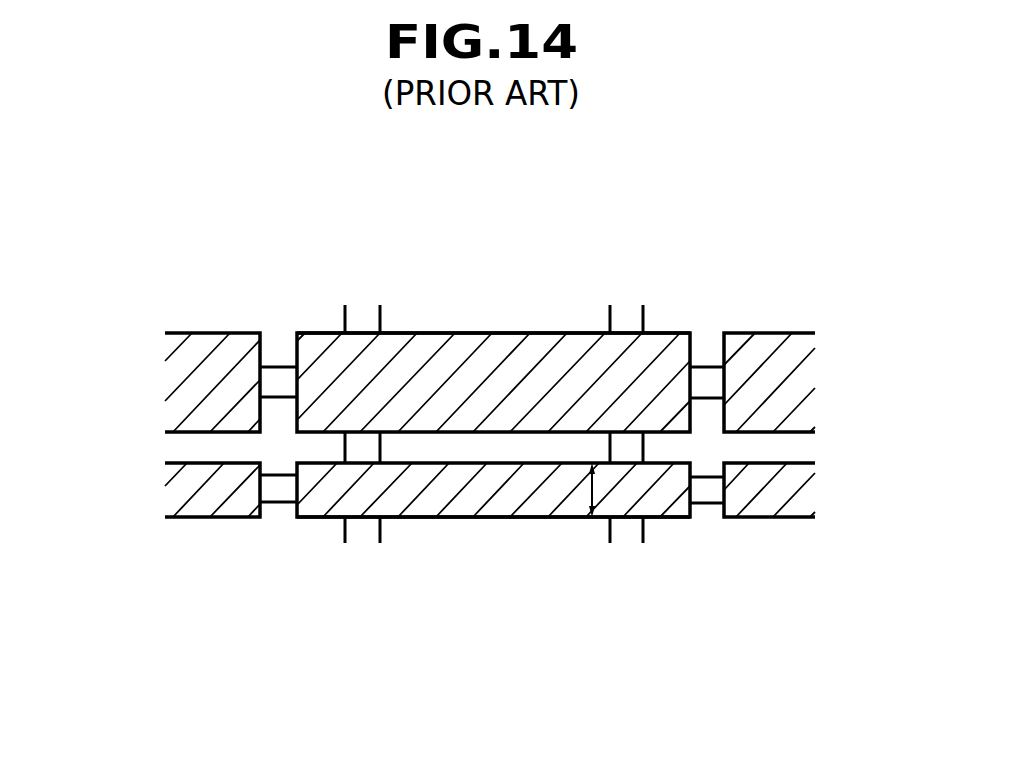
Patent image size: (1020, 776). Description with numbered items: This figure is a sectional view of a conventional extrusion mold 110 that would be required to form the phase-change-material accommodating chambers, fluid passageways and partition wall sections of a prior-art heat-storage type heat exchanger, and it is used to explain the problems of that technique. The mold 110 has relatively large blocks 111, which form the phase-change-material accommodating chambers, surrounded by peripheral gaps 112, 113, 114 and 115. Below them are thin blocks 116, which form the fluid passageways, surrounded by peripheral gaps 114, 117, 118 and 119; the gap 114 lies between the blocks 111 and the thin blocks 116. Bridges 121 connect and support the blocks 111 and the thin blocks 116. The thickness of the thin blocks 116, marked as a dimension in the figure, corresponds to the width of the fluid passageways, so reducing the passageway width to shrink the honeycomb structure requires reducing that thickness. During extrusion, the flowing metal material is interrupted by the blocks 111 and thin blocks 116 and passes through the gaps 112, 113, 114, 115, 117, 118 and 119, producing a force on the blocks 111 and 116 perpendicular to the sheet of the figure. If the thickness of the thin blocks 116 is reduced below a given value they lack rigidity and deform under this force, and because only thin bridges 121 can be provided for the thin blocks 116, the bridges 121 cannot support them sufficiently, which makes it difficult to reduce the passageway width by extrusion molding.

The mold 110 is at (304, 568).
The blocks 111 is at (183, 357).
The peripheral gap 112 is at (456, 312).
The peripheral gap 113 is at (707, 347).
The peripheral gap 114 is at (185, 445).
The peripheral gap 115 is at (278, 353).
The thin blocks 116 is at (188, 495).
The peripheral gap 117 is at (705, 517).
The peripheral gap 118 is at (565, 525).
The peripheral gap 119 is at (277, 508).
The bridges 121 is at (282, 482).